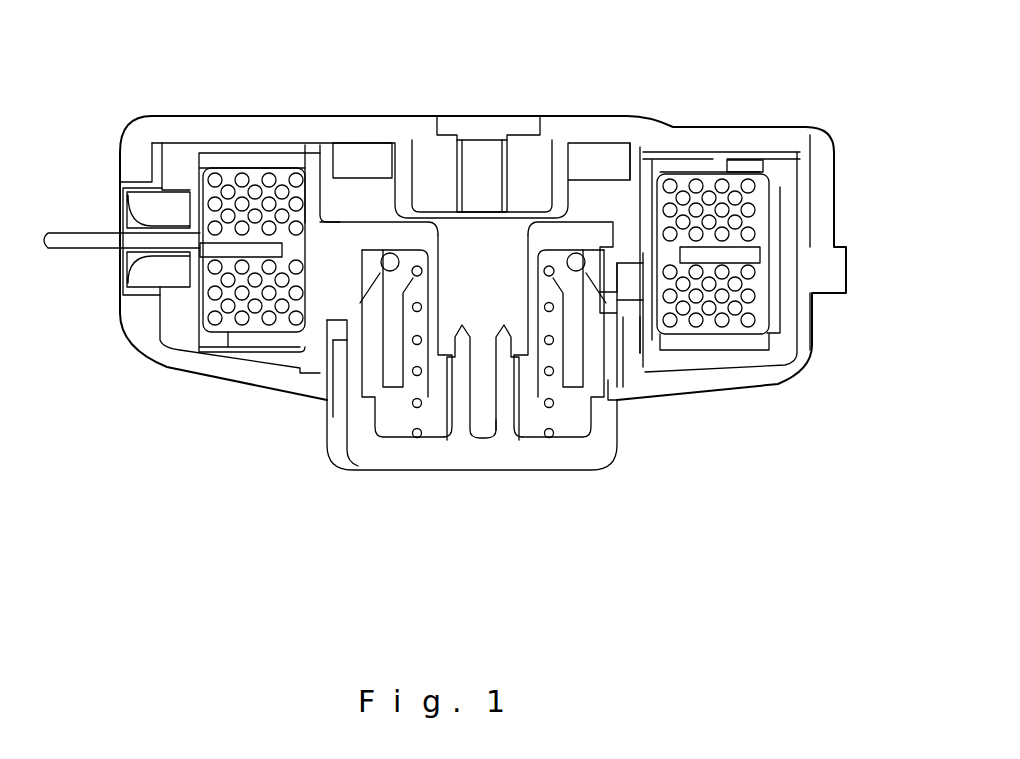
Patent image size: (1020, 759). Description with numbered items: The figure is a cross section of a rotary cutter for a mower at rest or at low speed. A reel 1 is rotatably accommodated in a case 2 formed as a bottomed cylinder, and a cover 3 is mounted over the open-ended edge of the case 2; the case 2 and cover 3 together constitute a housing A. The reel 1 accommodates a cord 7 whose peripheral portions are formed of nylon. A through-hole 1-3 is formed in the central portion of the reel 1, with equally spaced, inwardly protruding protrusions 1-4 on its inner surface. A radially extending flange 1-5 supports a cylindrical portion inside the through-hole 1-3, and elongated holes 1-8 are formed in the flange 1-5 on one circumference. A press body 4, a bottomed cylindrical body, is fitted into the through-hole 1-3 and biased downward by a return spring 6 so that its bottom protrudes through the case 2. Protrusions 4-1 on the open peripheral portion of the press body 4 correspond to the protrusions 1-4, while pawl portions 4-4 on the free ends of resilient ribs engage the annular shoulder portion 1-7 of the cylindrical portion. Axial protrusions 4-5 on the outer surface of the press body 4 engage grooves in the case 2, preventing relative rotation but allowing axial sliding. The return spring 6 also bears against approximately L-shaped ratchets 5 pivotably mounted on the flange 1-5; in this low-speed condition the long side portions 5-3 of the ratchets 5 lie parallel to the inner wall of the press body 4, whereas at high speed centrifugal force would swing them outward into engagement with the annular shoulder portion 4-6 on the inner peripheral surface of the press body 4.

The reel 1 is at (747, 200).
The through-hole 1-3 is at (640, 220).
The protrusions 1-4 is at (627, 313).
The flange 1-5 is at (353, 242).
The annular shoulder portion 1-7 is at (515, 372).
The elongated holes 1-8 is at (625, 233).
The case 2 is at (715, 383).
The cover 3 is at (733, 137).
The press body 4 is at (587, 450).
The protrusions 4-1 is at (623, 283).
The pawl portions 4-4 is at (460, 330).
The protrusions 4-5 is at (337, 437).
The annular shoulder portion 4-6 is at (363, 400).
The ratchets 5 is at (395, 350).
The long side portions 5-3 is at (563, 367).
The return spring 6 is at (417, 438).
The cord 7 is at (80, 233).
The housing A is at (833, 328).